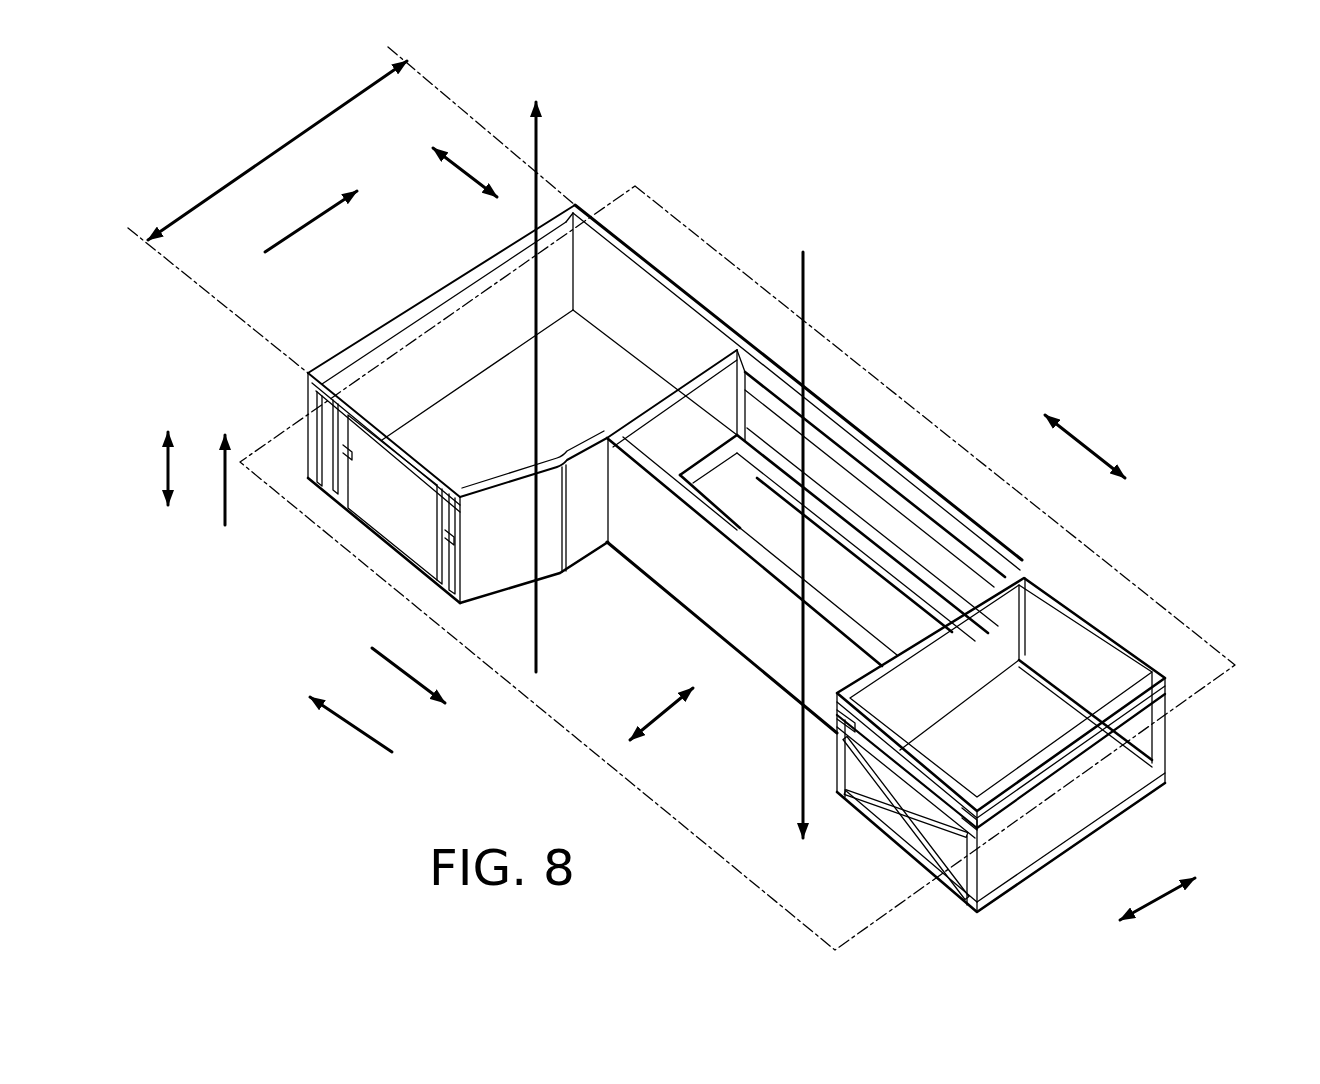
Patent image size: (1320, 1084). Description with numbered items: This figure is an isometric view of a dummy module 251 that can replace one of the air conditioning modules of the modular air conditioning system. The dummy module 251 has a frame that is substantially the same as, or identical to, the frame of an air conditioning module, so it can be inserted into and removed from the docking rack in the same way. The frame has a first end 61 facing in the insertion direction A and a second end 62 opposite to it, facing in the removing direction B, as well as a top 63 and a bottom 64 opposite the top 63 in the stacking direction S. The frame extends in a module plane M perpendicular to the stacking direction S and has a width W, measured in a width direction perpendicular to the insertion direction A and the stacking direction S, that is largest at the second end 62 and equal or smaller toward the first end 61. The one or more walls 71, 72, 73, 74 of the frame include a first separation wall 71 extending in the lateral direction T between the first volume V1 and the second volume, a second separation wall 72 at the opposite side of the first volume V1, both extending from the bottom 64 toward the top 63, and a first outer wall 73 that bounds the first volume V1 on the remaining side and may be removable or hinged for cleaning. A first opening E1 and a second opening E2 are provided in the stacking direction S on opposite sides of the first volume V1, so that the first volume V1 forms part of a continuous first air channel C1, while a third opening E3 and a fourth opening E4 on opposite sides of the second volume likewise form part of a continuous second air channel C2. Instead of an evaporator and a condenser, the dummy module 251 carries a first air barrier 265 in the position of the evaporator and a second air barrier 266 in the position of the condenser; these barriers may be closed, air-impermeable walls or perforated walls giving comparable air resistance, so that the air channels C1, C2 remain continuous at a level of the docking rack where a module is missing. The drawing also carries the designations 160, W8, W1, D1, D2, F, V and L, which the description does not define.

The dummy module 251 is at (1013, 287).
The first end 61 is at (1008, 893).
The second end 62 is at (517, 222).
The top 63 is at (820, 397).
The bottom 64 is at (680, 605).
The first separation wall 71 is at (700, 330).
The second separation wall 72 is at (945, 657).
The first outer wall 73 is at (887, 503).
The wall 74 is at (547, 563).
The corner junction 160 is at (740, 328).
The first air barrier 265 is at (787, 670).
The second air barrier 266 is at (415, 300).
The first opening E1 is at (850, 437).
The second opening E2 is at (920, 587).
The third opening E3 is at (614, 228).
The fourth opening E4 is at (378, 465).
The first air channel C1 is at (718, 431).
The second air channel C2 is at (603, 393).
The first volume V1 is at (586, 433).
The module plane M is at (1215, 668).
The width W is at (351, 210).
The width axis W8 is at (547, 373).
The width axis W1 is at (827, 540).
The first direction D1 is at (661, 715).
The second direction D2 is at (469, 170).
The forward direction F is at (311, 221).
The lateral direction T is at (1085, 440).
The vertical direction V is at (149, 468).
The stacking direction S is at (228, 501).
The insertion direction A is at (408, 665).
The removing direction B is at (351, 735).
The longitudinal direction L is at (1157, 906).